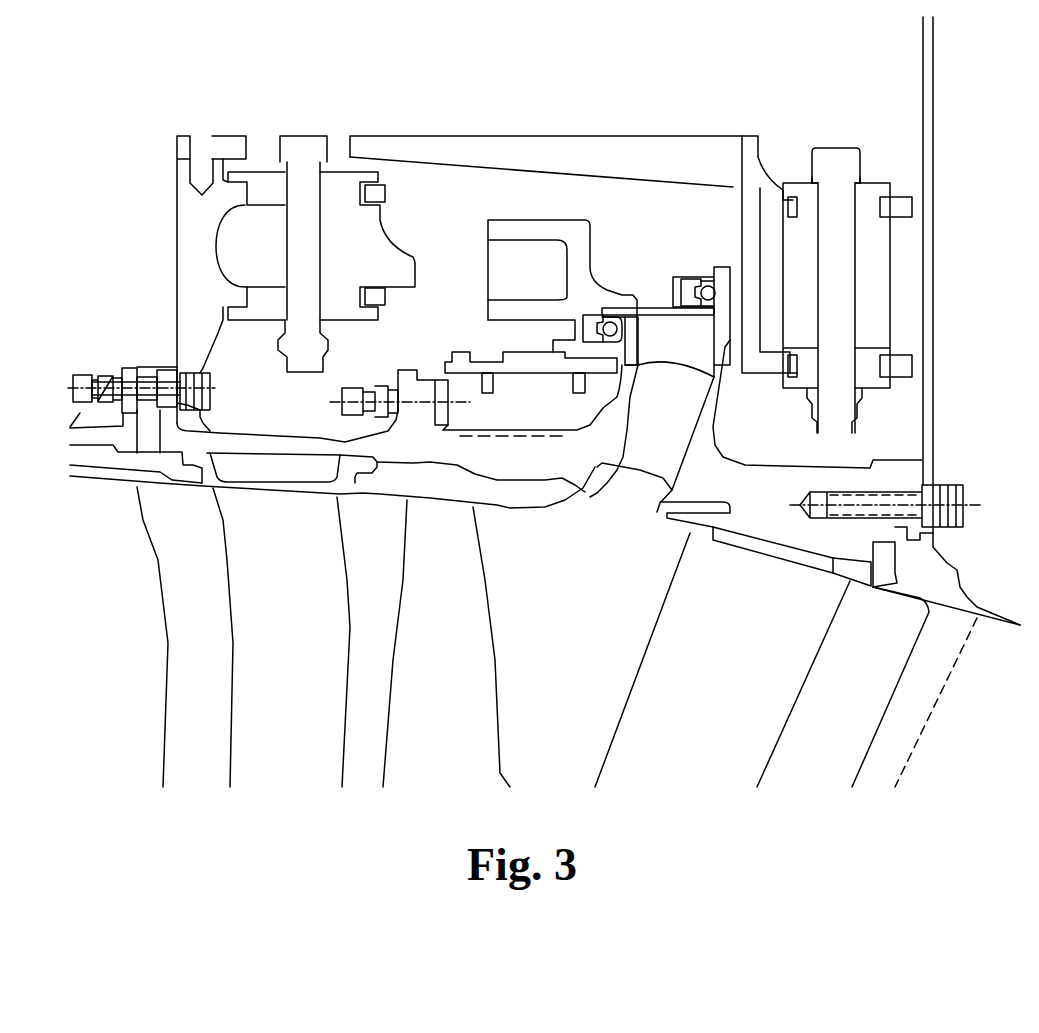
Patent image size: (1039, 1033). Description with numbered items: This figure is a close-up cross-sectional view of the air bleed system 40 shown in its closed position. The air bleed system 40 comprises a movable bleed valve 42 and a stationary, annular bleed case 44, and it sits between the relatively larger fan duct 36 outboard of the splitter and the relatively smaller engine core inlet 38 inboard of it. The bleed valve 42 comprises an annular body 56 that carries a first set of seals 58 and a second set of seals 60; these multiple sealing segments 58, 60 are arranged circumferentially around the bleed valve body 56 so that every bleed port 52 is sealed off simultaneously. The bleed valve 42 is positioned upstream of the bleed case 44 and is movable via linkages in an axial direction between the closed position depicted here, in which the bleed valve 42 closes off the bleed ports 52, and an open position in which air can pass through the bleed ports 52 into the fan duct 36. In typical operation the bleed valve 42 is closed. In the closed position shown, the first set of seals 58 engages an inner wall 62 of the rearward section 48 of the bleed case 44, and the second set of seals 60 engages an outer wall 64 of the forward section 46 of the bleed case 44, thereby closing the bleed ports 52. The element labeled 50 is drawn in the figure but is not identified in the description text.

The fan duct 36 is at (544, 321).
The engine core inlet 38 is at (545, 675).
The air bleed system 40 is at (789, 146).
The bleed valve 42 is at (508, 218).
The bleed case 44 is at (633, 333).
The forward section 46 is at (580, 397).
The rearward section 48 is at (713, 428).
The divider wall 50 is at (667, 438).
The bleed port 52 is at (623, 496).
The annular body 56 is at (633, 308).
The first set of seals 58 is at (708, 296).
The second set of seals 60 is at (613, 323).
The inner wall 62 is at (715, 275).
The outer wall 64 is at (633, 365).